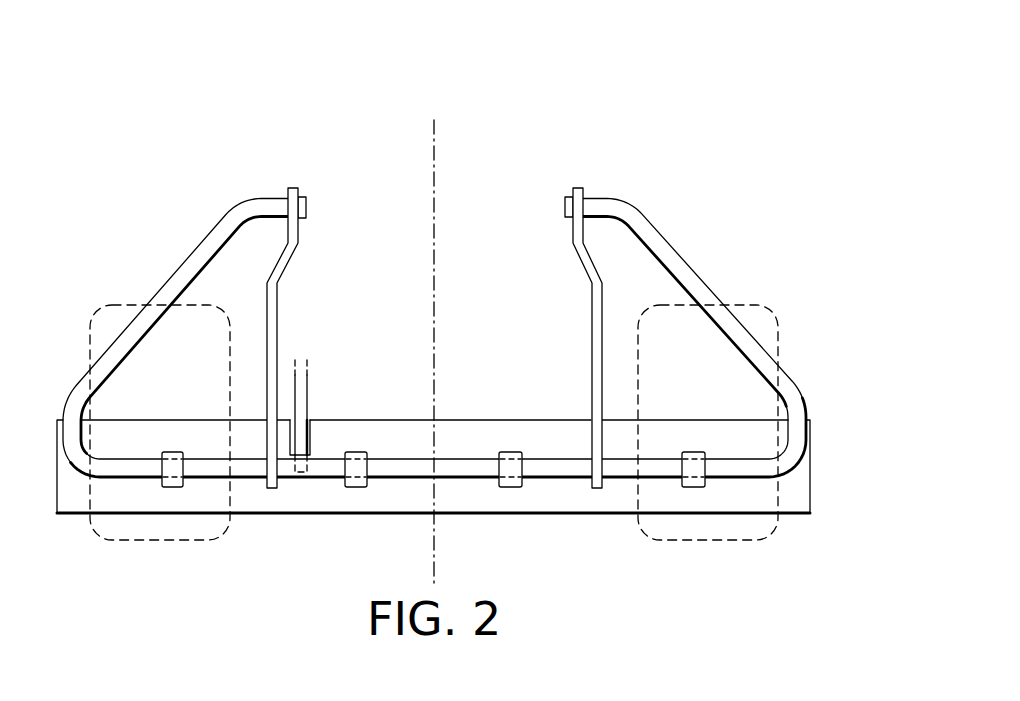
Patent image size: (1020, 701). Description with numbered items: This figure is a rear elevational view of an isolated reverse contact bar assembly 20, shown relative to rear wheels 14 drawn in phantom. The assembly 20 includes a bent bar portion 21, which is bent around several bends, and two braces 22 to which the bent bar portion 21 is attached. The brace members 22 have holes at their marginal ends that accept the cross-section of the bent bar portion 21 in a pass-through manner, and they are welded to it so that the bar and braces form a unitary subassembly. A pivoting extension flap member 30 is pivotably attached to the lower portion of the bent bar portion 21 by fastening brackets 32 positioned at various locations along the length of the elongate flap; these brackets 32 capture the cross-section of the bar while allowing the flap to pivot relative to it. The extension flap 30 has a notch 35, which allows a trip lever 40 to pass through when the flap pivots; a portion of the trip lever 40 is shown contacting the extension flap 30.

The rear wheels 14 is at (163, 540).
The contact bar assembly 20 is at (470, 247).
The bent bar portion 21 is at (663, 247).
The braces 22 is at (292, 188).
The pivoting extension flap member 30 is at (813, 524).
The fastening brackets 32 is at (693, 487).
The notch 35 is at (313, 443).
The trip lever 40 is at (312, 398).